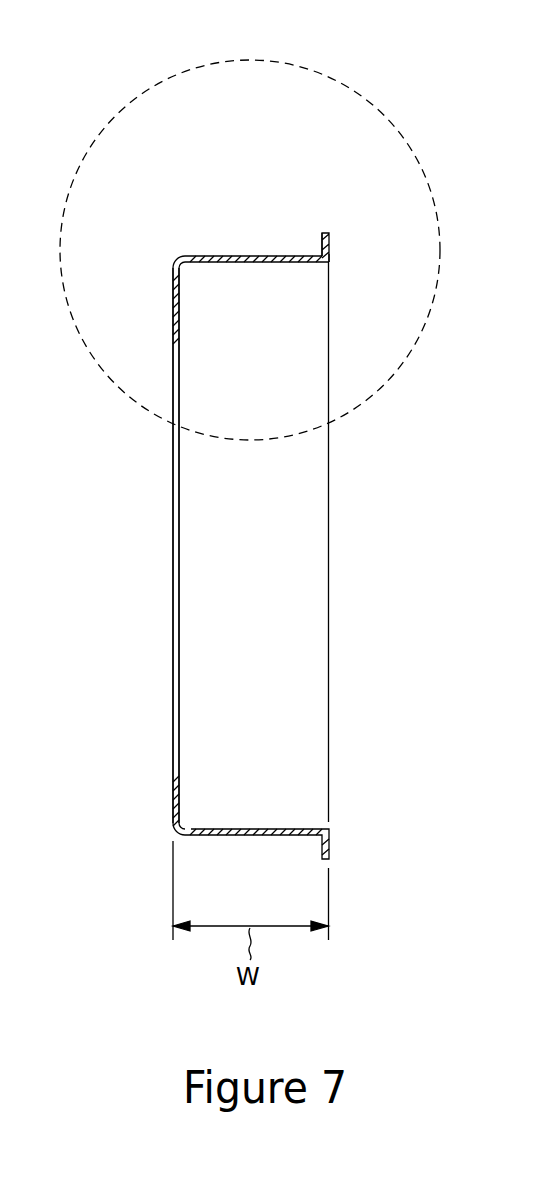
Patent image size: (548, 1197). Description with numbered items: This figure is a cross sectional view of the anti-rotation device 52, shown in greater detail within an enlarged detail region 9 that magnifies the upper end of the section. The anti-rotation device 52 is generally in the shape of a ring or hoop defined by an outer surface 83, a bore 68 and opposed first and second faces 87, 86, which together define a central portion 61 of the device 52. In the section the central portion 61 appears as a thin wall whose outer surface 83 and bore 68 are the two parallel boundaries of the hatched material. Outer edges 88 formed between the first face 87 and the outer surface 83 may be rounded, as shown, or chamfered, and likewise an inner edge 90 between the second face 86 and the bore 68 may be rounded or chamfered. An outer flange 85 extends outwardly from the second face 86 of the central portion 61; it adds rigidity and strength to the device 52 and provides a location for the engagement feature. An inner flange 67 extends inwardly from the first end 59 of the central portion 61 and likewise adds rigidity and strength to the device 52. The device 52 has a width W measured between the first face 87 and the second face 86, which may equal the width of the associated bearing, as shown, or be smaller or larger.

The enlarged detail region 9 is at (302, 66).
The anti-rotation device 52 is at (264, 222).
The central portion 61 is at (294, 230).
The outer surface 83 is at (242, 256).
The bore 68 is at (236, 264).
The outer edges 88 is at (175, 262).
The first end 59 is at (173, 283).
The first face 87 is at (173, 296).
The inner flange 67 is at (179, 308).
The outer flange 85 is at (329, 235).
The second face 86 is at (331, 246).
The inner edge 90 is at (333, 263).